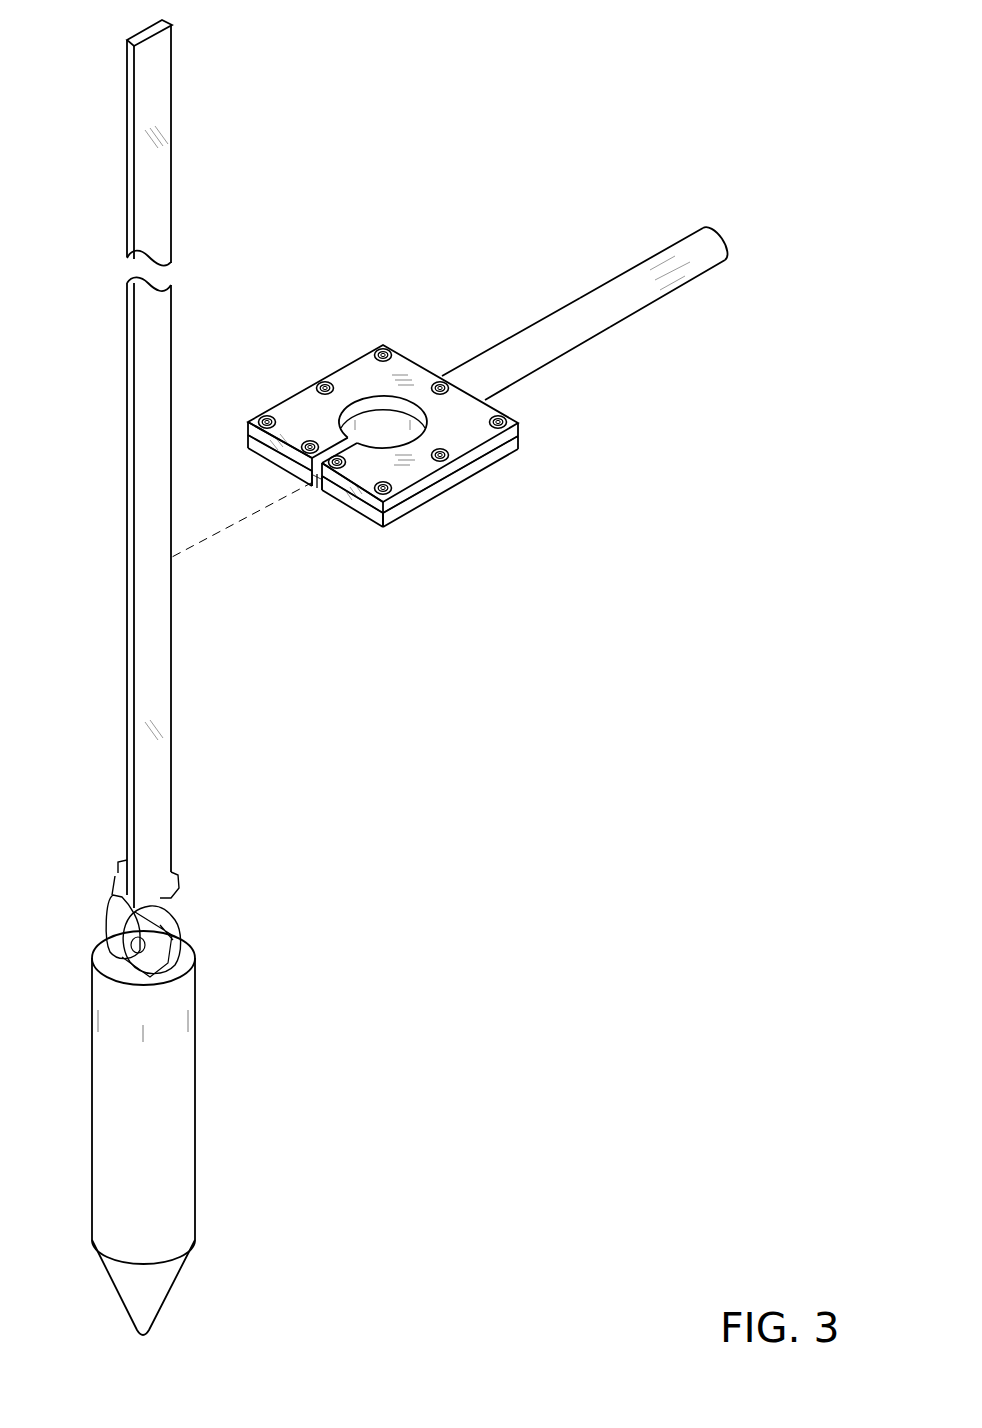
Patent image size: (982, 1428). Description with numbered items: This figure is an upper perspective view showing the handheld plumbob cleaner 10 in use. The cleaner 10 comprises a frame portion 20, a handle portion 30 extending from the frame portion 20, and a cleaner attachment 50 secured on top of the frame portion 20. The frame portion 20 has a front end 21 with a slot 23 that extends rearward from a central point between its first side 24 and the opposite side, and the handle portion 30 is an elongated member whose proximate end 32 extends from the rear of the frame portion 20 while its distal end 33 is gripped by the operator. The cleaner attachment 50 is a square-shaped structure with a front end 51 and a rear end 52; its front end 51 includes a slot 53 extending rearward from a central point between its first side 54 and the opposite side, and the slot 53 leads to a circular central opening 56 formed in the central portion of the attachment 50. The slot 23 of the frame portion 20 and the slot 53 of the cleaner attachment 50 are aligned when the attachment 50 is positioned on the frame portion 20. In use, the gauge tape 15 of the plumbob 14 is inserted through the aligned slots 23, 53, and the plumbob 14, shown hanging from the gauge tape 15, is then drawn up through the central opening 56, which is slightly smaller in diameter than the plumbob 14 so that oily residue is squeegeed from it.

The handheld plumbob cleaner 10 is at (647, 112).
The plumbob 14 is at (197, 1097).
The gauge tape 15 is at (147, 627).
The frame portion 20 is at (449, 496).
The front end 21 is at (363, 512).
The slot 23 is at (313, 497).
The first side 24 is at (473, 470).
The handle portion 30 is at (605, 336).
The proximate end 32 is at (498, 397).
The distal end 33 is at (718, 229).
The cleaner attachment 50 is at (340, 360).
The front end 51 is at (270, 443).
The rear end 52 is at (412, 360).
The slot 53 is at (332, 440).
The first side 54 is at (400, 497).
The central opening 56 is at (424, 431).